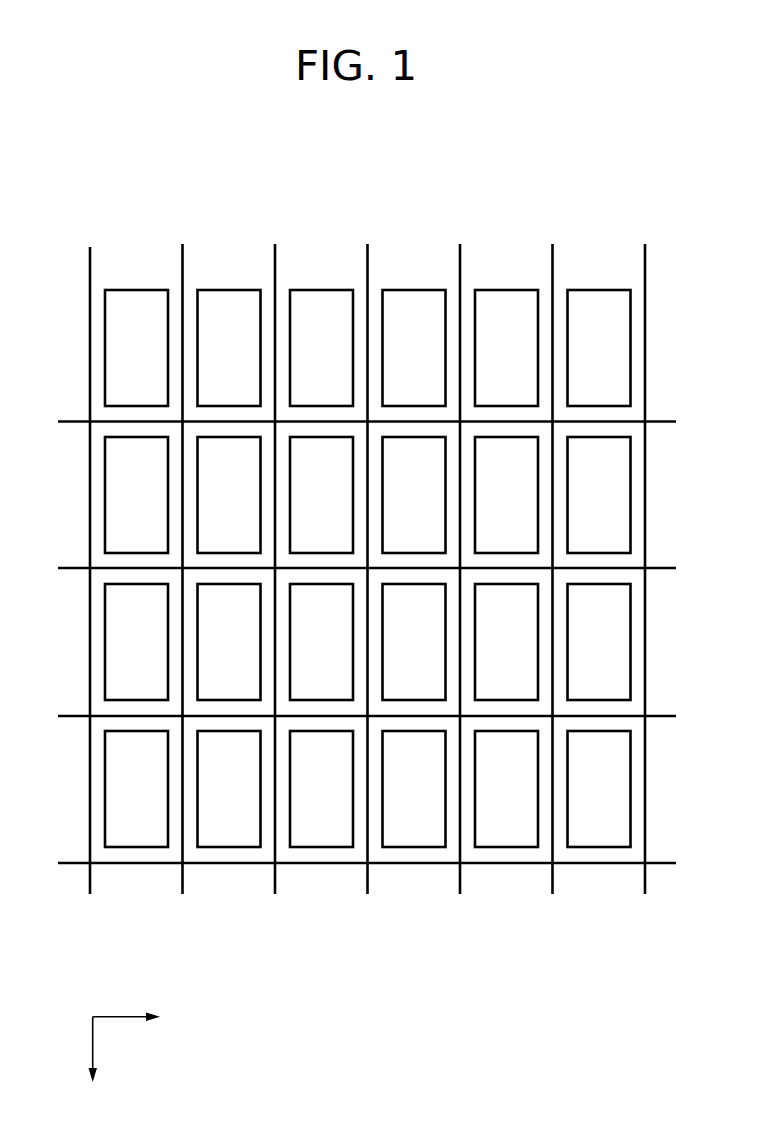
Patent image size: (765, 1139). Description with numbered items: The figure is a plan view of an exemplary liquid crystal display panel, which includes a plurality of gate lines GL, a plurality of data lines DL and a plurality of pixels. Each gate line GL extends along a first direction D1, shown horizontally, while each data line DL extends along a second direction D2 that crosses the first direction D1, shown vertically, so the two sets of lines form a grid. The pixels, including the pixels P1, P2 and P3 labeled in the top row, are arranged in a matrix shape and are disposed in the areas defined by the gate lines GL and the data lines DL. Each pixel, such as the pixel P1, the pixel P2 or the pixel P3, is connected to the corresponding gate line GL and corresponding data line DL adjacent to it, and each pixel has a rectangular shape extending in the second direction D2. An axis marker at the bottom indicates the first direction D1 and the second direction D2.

The data line DL is at (361, 557).
The gate line GL is at (353, 636).
The pixel P1 is at (136, 348).
The pixel P2 is at (229, 348).
The pixel P3 is at (321, 348).
The first direction D1 is at (141, 1017).
The second direction D2 is at (93, 1066).